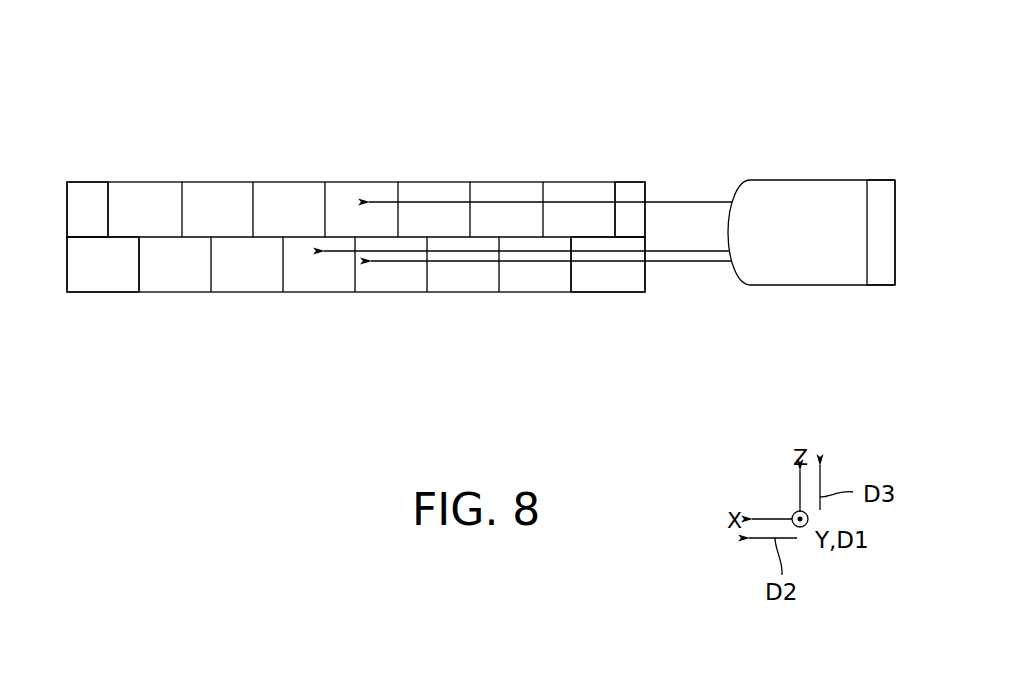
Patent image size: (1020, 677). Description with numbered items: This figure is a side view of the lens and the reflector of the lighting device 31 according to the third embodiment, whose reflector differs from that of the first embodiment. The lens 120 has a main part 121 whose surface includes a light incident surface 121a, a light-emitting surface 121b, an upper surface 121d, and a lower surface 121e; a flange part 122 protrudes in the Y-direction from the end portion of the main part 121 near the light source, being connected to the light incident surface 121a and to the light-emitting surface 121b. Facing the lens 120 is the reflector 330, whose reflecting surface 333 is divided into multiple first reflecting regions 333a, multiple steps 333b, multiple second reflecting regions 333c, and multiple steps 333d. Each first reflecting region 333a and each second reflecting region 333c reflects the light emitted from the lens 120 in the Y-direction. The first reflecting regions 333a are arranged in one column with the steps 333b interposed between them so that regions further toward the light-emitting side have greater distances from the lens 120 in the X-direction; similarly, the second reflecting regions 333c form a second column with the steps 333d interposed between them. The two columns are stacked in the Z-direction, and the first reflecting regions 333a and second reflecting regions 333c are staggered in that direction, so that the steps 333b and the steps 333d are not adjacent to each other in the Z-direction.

The lighting device 31 is at (88, 31).
The reflector 330 is at (232, 180).
The reflecting surface 333 is at (66, 247).
The first reflecting region 333a is at (80, 198).
The step 333b is at (108, 203).
The second reflecting region 333c is at (97, 275).
The step 333d is at (137, 275).
The lens 120 is at (925, 362).
The main part 121 is at (815, 268).
The light incident surface 121a is at (898, 202).
The light-emitting surface 121b is at (742, 188).
The upper surface 121d is at (808, 178).
The lower surface 121e is at (802, 285).
The flange part 122 is at (878, 270).